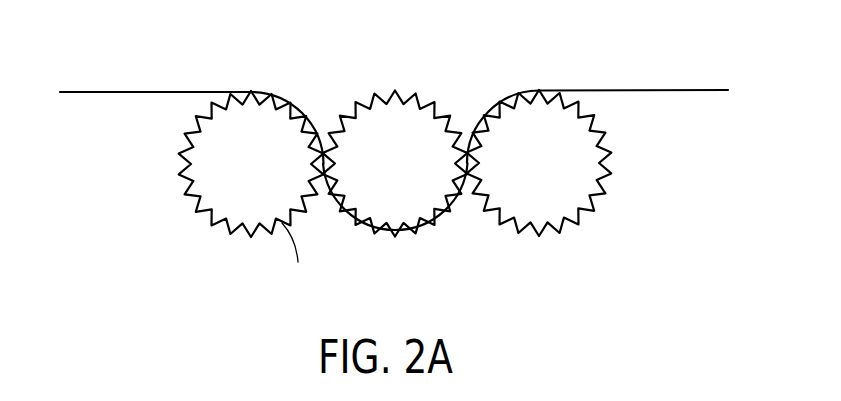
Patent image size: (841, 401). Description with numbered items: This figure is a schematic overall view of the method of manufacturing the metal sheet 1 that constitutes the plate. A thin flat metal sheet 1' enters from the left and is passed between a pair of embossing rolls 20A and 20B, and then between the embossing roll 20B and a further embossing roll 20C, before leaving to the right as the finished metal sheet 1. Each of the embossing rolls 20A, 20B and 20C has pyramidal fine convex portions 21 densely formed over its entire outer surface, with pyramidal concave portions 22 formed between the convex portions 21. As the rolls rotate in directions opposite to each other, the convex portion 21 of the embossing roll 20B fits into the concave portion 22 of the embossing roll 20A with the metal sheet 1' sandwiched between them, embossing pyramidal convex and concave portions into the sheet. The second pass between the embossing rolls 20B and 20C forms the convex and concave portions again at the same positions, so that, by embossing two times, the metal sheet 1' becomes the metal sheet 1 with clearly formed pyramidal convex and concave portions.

The metal sheet 1 is at (633, 58).
The thin flat metal sheet 1' is at (155, 59).
The embossing roll 20A is at (232, 215).
The embossing roll 20B is at (397, 213).
The embossing roll 20C is at (545, 213).
The pyramidal fine convex portion 21 is at (312, 190).
The pyramidal concave portion 22 is at (294, 258).